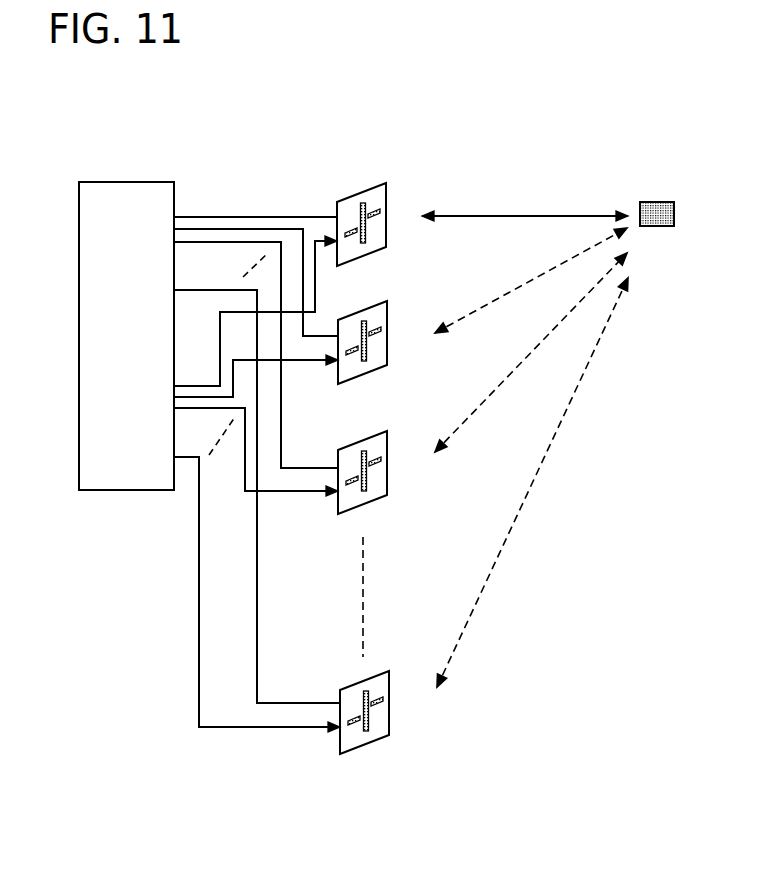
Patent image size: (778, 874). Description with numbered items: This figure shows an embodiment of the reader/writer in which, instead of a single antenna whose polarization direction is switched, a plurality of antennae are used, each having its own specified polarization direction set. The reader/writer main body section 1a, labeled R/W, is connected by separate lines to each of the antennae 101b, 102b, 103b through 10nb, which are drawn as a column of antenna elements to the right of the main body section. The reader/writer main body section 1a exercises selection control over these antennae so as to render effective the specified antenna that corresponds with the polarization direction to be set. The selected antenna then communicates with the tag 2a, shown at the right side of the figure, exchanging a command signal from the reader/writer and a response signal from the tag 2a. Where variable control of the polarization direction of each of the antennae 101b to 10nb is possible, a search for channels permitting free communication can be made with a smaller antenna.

The reader/writer main body section 1a is at (138, 187).
The tag 2a is at (655, 202).
The antenna 101b is at (385, 183).
The antenna 102b is at (386, 301).
The antenna 103b is at (386, 431).
The antenna 10nb is at (388, 671).